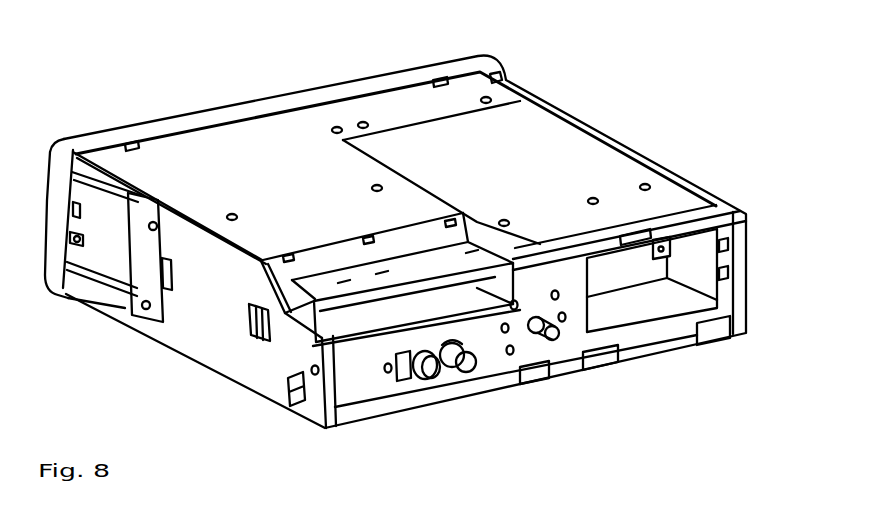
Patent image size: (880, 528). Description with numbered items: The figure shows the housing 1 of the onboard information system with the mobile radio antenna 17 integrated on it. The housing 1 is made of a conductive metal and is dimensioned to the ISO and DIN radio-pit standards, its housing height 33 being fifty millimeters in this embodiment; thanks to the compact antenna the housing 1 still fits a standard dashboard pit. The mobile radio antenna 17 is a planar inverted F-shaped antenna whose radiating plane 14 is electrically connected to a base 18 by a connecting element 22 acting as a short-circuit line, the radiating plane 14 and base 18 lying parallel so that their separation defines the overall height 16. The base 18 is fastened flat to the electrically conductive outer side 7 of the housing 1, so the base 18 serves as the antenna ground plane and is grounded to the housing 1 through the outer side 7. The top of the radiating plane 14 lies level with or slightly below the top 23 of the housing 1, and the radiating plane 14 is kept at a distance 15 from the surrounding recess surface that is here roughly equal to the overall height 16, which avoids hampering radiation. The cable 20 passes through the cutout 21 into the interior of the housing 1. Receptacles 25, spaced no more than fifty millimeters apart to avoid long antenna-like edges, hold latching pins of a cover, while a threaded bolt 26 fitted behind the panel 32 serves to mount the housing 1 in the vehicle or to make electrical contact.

The housing 1 is at (187, 340).
The outer side 7 is at (497, 85).
The radiating plane 14 is at (250, 337).
The distance 15 is at (502, 259).
The overall height 16 is at (413, 302).
The mobile radio antenna 17 is at (308, 316).
The base 18 is at (372, 318).
The cable 20 is at (398, 296).
The cutout 21 is at (434, 383).
The connecting element 22 is at (460, 283).
The top 23 is at (172, 163).
The receptacle 25 is at (455, 222).
The threaded bolt 26 is at (545, 333).
The panel 32 is at (55, 268).
The housing height 33 is at (758, 214).